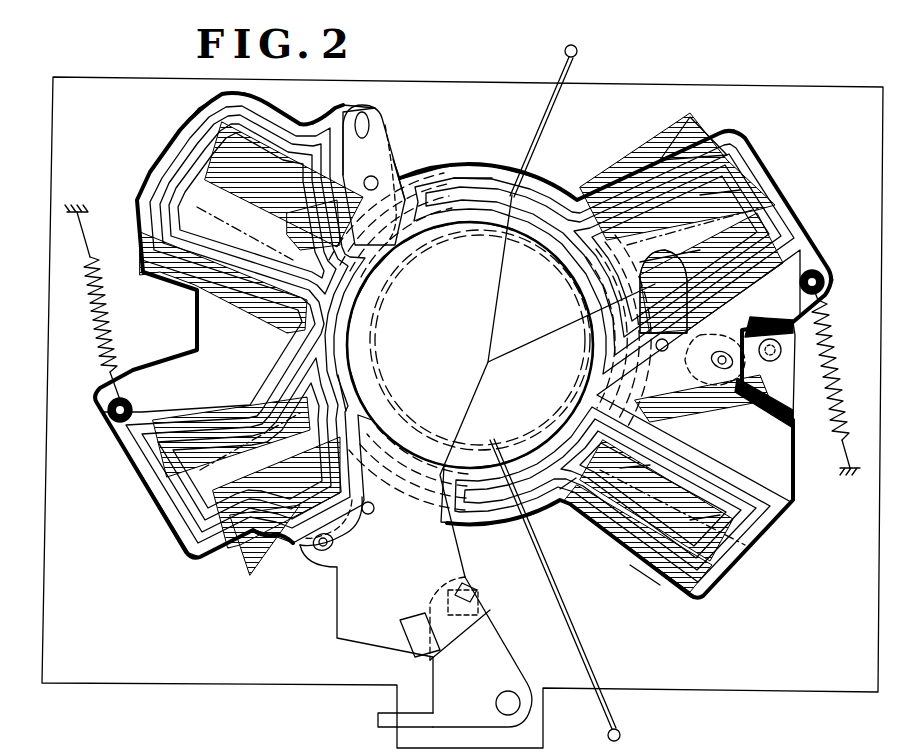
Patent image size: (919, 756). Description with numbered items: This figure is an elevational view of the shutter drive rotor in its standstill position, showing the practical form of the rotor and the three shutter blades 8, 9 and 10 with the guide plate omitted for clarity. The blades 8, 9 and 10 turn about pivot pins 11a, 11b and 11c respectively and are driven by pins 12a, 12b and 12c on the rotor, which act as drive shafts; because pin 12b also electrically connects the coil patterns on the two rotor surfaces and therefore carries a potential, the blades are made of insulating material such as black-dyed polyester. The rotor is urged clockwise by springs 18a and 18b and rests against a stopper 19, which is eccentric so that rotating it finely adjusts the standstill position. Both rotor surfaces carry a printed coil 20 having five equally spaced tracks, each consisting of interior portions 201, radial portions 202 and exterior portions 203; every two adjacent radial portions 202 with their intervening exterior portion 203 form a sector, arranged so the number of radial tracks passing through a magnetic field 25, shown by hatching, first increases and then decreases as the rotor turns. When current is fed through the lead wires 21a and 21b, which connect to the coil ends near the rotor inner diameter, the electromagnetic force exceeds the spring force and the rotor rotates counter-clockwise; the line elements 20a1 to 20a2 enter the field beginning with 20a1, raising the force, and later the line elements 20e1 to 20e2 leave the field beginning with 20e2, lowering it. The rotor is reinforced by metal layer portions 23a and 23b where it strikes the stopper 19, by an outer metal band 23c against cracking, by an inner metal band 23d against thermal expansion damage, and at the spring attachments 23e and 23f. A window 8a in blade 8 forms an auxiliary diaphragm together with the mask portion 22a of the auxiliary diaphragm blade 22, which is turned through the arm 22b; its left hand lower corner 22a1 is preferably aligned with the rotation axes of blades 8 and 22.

The shutter blade 8 is at (345, 593).
The window 8a is at (405, 648).
The shutter blade 9 is at (693, 328).
The shutter blade 10 is at (380, 160).
The pivot pin 11a is at (370, 513).
The pivot pin 11b is at (668, 346).
The pivot pin 11c is at (345, 173).
The pin 12a is at (335, 548).
The pin 12b is at (730, 366).
The pin 12c is at (375, 120).
The spring 18a is at (836, 332).
The spring 18b is at (85, 285).
The stopper 19 is at (776, 370).
The coil 20 is at (770, 525).
The interior portion 201 is at (478, 178).
The radial portion 202 is at (661, 244).
The exterior portion 203 is at (707, 219).
The line element 20a1 is at (570, 510).
The line element 20a2 is at (642, 578).
The line element 20e1 is at (636, 472).
The line element 20e2 is at (692, 520).
The lead wire 21a is at (547, 117).
The lead wire 21b is at (582, 650).
The auxiliary diaphragm blade 22 is at (505, 638).
The mask portion 22a is at (480, 590).
The left hand lower corner of mask portion 22a1 is at (460, 640).
The arm 22b is at (378, 720).
The metal layer portion 23a is at (780, 358).
The metal layer portion 23b is at (790, 430).
The outer metal portion 23c is at (187, 556).
The inner metal portion 23d is at (345, 395).
The reinforced portion 23e is at (820, 276).
The reinforced portion 23f is at (127, 401).
The magnetic field 25 is at (682, 114).